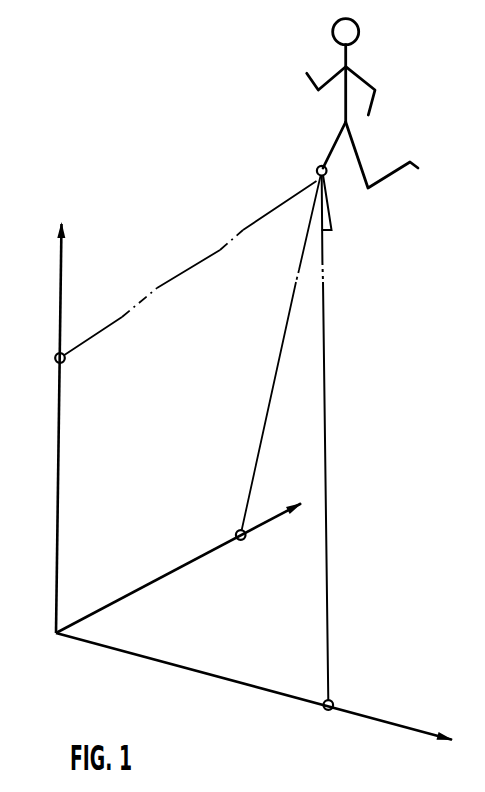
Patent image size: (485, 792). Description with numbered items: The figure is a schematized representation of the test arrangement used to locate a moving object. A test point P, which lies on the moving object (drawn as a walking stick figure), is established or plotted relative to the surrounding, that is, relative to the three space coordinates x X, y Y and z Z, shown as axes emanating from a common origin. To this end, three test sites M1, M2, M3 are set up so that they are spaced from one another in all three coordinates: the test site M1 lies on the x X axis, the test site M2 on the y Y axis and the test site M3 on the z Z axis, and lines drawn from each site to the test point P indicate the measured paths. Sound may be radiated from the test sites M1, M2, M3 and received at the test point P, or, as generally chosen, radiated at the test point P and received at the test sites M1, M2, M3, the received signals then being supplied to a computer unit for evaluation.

The test point P is at (317, 169).
The test site M1 is at (316, 456).
The test site M2 is at (276, 370).
The test site M3 is at (172, 274).
The space coordinate x X is at (254, 697).
The space coordinate y Y is at (179, 568).
The space coordinate z Z is at (66, 427).